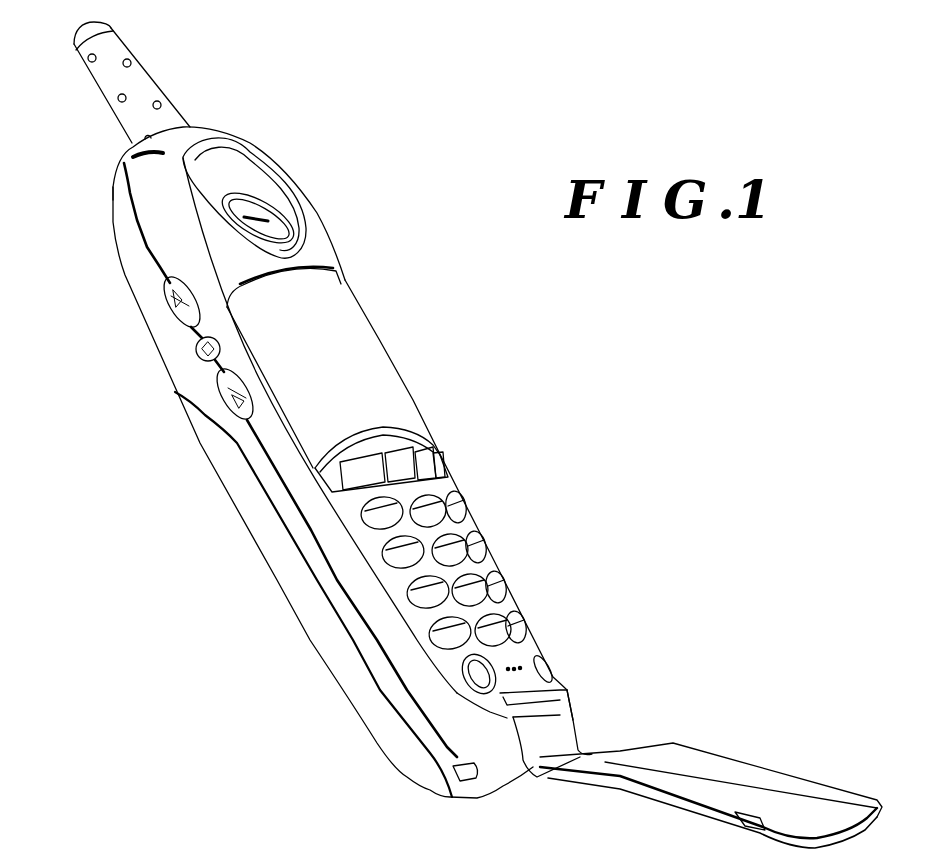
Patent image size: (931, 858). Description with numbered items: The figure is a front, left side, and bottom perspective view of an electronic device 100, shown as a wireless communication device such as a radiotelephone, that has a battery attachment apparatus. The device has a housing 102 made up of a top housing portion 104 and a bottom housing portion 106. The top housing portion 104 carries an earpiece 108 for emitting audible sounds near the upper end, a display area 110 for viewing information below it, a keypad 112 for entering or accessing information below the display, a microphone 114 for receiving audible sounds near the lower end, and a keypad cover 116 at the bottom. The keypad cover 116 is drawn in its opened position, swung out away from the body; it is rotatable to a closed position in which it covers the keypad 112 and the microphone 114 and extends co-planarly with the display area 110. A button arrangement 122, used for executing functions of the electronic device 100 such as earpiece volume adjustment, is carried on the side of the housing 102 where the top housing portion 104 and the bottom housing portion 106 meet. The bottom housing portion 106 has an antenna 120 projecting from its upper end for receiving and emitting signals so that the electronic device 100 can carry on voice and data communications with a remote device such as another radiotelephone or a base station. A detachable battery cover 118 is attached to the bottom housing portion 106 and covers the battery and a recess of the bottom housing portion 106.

The electronic device 100 is at (572, 364).
The housing 102 is at (122, 165).
The top housing portion 104 is at (482, 758).
The bottom housing portion 106 is at (125, 283).
The earpiece 108 is at (250, 207).
The display area 110 is at (372, 357).
The keypad 112 is at (493, 545).
The microphone 114 is at (527, 669).
The keypad cover 116 is at (768, 778).
The detachable battery cover 118 is at (315, 624).
The antenna 120 is at (133, 55).
The button arrangement 122 is at (190, 363).